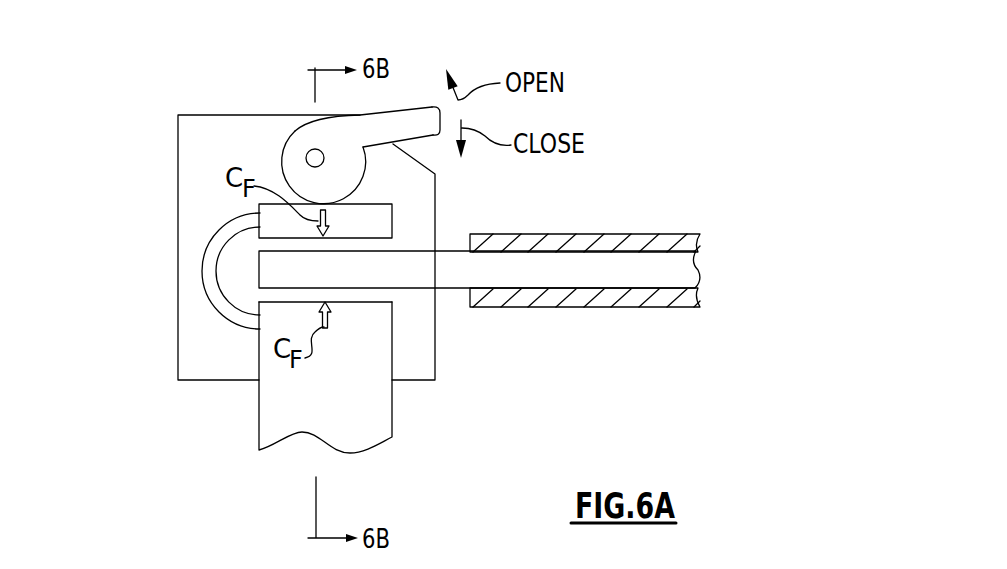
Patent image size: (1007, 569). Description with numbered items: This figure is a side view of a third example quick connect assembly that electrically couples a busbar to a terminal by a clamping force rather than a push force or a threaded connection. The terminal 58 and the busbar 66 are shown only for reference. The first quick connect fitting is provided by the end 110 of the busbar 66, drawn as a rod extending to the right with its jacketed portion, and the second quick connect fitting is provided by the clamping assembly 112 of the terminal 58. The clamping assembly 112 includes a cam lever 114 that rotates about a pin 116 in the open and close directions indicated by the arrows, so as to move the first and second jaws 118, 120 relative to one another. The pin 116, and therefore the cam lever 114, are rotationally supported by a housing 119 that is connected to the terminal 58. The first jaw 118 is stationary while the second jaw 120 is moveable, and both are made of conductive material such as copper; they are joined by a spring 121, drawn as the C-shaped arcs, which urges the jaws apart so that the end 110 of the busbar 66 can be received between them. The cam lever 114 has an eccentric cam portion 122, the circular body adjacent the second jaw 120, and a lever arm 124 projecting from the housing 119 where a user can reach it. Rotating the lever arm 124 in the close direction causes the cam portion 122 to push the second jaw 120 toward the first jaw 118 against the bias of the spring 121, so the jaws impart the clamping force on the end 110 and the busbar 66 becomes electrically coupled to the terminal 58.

The terminal 58 is at (373, 417).
The busbar 66 is at (696, 214).
The end of the busbar 110 is at (410, 265).
The clamping assembly 112 is at (147, 260).
The cam lever 114 is at (409, 96).
The pin 116 is at (315, 149).
The first jaw 118 is at (259, 301).
The housing 119 is at (178, 148).
The second jaw 120 is at (270, 228).
The spring 121 is at (208, 277).
The eccentric cam portion 122 is at (342, 172).
The lever arm 124 is at (421, 122).